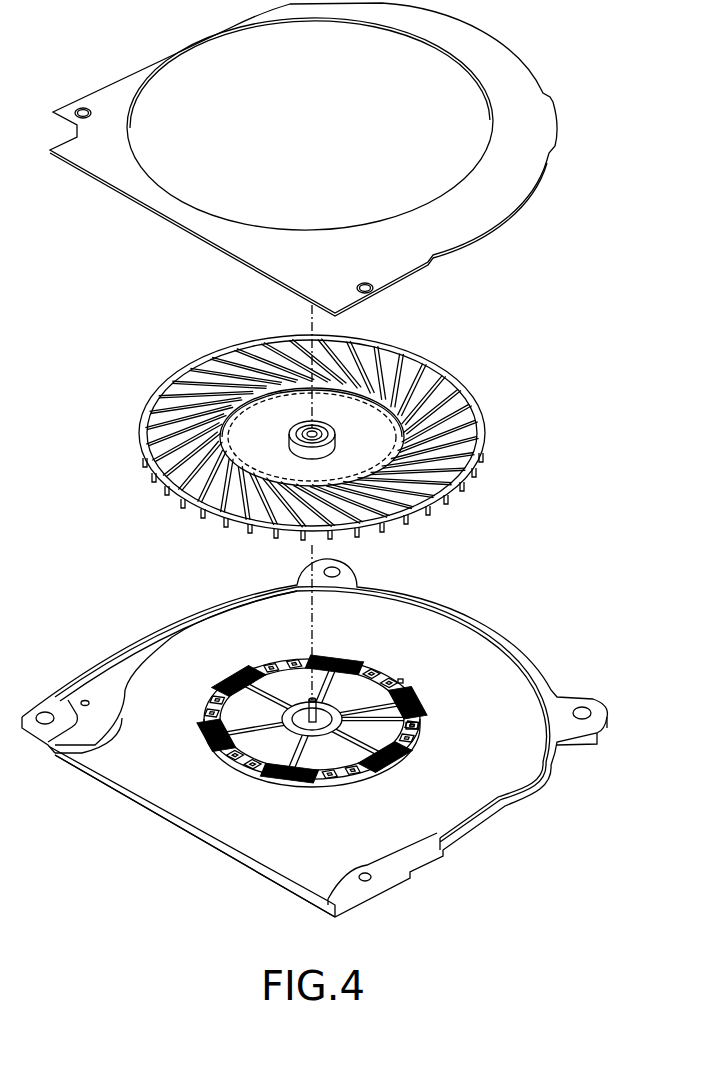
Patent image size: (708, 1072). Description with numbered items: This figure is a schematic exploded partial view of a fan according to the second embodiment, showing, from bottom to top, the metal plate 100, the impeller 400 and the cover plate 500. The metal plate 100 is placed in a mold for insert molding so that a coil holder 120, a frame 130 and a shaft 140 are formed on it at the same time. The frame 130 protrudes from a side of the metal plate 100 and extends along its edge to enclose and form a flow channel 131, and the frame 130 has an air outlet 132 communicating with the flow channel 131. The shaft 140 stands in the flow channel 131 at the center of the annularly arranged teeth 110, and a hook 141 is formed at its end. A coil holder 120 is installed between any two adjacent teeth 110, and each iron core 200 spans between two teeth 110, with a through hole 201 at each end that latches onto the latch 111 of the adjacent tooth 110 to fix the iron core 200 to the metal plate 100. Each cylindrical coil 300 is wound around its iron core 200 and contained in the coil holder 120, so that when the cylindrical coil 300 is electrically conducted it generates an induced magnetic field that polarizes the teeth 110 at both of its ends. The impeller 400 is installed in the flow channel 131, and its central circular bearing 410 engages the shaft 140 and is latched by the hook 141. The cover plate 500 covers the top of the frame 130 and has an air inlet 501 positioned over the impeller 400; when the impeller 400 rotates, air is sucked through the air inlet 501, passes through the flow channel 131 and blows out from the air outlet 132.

The metal plate 100 is at (475, 840).
The teeth 110 is at (367, 730).
The latch 111 is at (383, 685).
The coil holder 120 is at (422, 710).
The frame 130 is at (540, 660).
The flow channel 131 is at (430, 631).
The air outlet 132 is at (200, 820).
The shaft 140 is at (268, 667).
The hook 141 is at (292, 712).
The iron core 200 is at (407, 693).
The through hole 201 is at (404, 681).
The cylindrical coil 300 is at (412, 712).
The impeller 400 is at (470, 381).
The circular bearing 410 is at (302, 423).
The cover plate 500 is at (505, 72).
The air inlet 501 is at (198, 57).